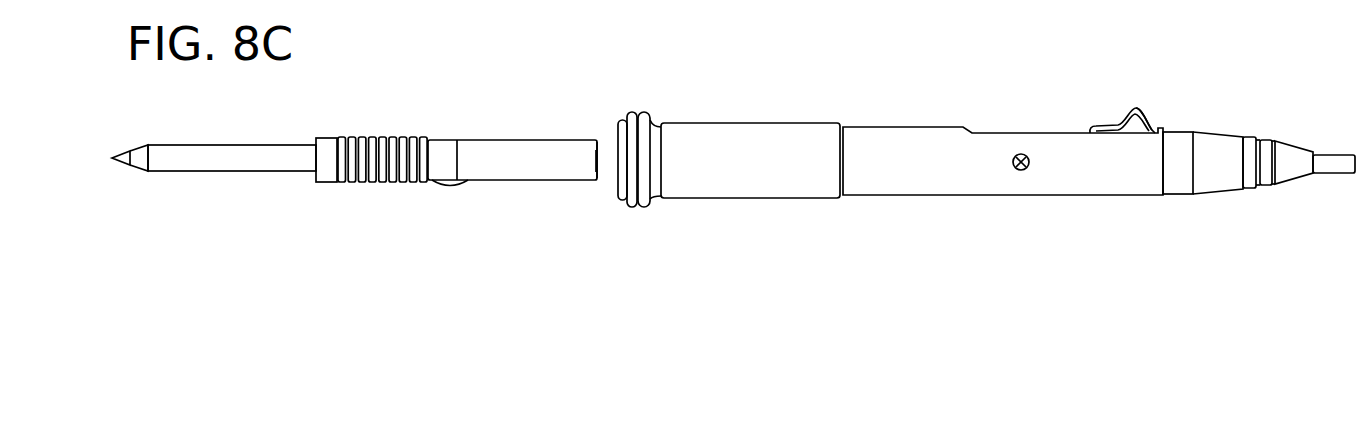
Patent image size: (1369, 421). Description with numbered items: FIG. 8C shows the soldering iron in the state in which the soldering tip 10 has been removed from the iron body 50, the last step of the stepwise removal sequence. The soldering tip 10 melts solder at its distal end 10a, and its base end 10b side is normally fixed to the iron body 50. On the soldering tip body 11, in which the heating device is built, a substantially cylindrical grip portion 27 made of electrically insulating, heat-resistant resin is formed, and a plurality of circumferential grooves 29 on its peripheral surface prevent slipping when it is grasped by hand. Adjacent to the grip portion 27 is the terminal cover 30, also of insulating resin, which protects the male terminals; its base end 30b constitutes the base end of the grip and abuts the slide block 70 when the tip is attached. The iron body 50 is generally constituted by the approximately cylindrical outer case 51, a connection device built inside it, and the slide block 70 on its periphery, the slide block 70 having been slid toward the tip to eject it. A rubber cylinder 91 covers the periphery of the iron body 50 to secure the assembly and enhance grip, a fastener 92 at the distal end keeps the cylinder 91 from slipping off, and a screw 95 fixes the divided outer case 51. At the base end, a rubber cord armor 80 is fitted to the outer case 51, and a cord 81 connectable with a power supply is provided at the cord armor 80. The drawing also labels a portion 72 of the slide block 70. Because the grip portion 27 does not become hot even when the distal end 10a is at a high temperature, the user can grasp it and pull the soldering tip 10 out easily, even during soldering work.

The soldering tip 10 is at (367, 151).
The distal end 10a is at (119, 166).
The base end 10b is at (600, 147).
The soldering tip body 11 is at (200, 172).
The grip portion 27 is at (324, 172).
The grooves 29 is at (348, 137).
The terminal cover 30 is at (489, 183).
The base end of terminal cover 30b is at (600, 182).
The iron body 50 is at (986, 154).
The outer case 51 is at (952, 178).
The slide block 70 is at (1129, 74).
The lever operating portion 72 is at (1152, 125).
The cord armor 80 is at (1220, 194).
The cord 81 is at (1328, 174).
The cylinder 91 is at (729, 198).
The fastener 92 is at (643, 207).
The screw 95 is at (1033, 167).